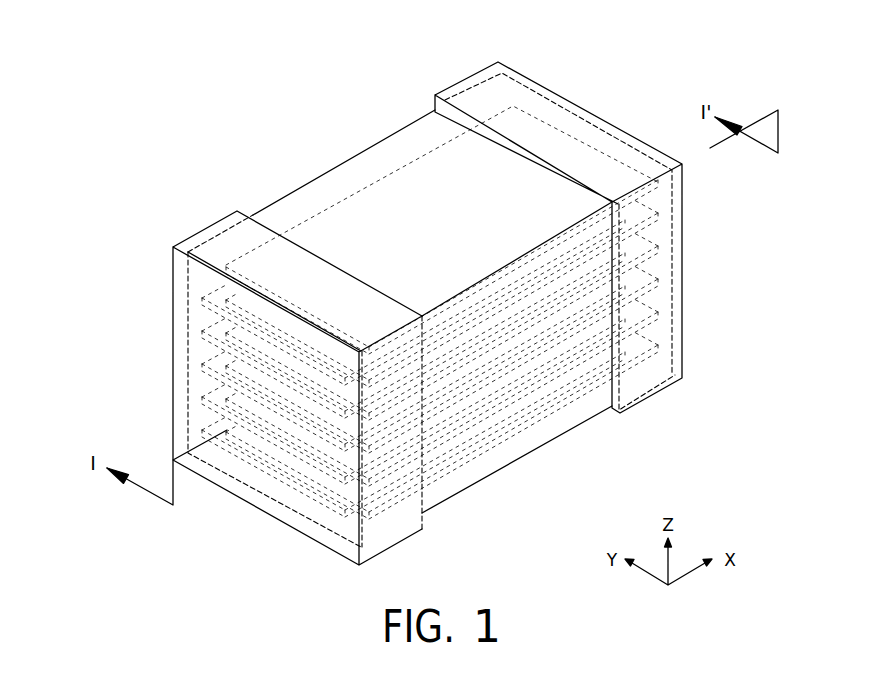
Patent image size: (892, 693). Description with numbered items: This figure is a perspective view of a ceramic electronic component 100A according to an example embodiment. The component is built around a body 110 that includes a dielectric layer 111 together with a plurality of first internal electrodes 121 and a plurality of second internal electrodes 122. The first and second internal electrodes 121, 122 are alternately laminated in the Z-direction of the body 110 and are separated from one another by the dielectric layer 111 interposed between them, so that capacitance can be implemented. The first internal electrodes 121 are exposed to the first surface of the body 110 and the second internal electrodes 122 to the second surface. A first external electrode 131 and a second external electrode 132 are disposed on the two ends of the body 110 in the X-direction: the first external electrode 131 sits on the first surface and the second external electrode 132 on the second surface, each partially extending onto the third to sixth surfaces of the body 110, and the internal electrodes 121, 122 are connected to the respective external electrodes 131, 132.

The ceramic electronic component 100A is at (224, 33).
The body 110 is at (387, 134).
The dielectric layer 111 is at (328, 200).
The first internal electrodes 121 is at (320, 485).
The second internal electrodes 122 is at (640, 317).
The first external electrode 131 is at (207, 229).
The second external electrode 132 is at (465, 79).